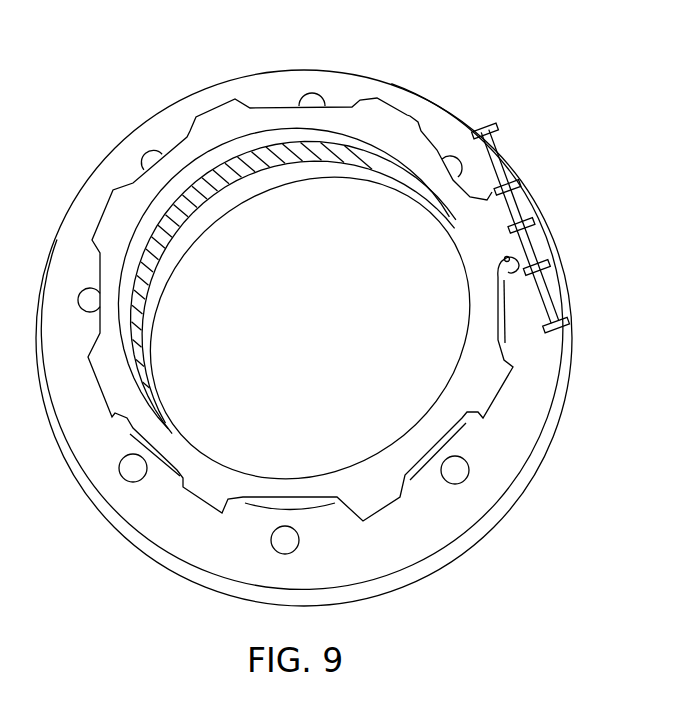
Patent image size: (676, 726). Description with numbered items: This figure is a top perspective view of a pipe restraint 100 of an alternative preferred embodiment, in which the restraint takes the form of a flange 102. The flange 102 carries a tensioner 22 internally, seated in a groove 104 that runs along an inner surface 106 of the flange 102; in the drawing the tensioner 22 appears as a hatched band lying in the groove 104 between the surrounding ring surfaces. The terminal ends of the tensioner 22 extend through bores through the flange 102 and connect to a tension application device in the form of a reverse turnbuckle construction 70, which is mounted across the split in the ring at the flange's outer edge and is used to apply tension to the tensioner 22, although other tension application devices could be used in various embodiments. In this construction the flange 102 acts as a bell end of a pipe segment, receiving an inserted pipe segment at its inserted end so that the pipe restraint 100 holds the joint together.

The pipe restraint 100 is at (324, 337).
The flange 102 is at (445, 98).
The groove 104 is at (263, 146).
The inner surface 106 is at (327, 158).
The tensioner 22 is at (236, 187).
The reverse turnbuckle construction 70 is at (541, 200).